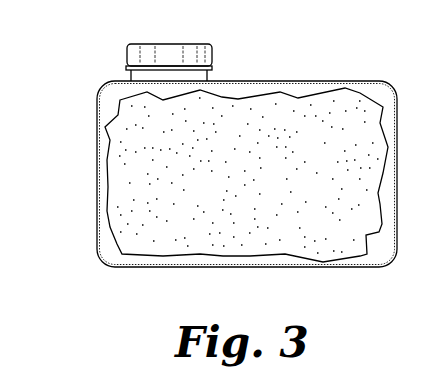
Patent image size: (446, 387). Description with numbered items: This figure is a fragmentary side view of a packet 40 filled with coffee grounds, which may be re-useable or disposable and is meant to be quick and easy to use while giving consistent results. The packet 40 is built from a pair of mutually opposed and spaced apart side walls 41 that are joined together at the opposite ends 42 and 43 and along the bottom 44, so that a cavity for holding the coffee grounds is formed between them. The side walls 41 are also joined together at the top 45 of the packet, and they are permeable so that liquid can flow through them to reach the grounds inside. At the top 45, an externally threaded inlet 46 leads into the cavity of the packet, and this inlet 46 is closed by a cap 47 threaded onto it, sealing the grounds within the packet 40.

The packet 40 is at (343, 113).
The side walls 41 is at (108, 173).
The end 42 is at (97, 232).
The end 43 is at (398, 222).
The bottom 44 is at (137, 267).
The top 45 is at (286, 80).
The externally threaded inlet 46 is at (137, 57).
The cap 47 is at (163, 51).